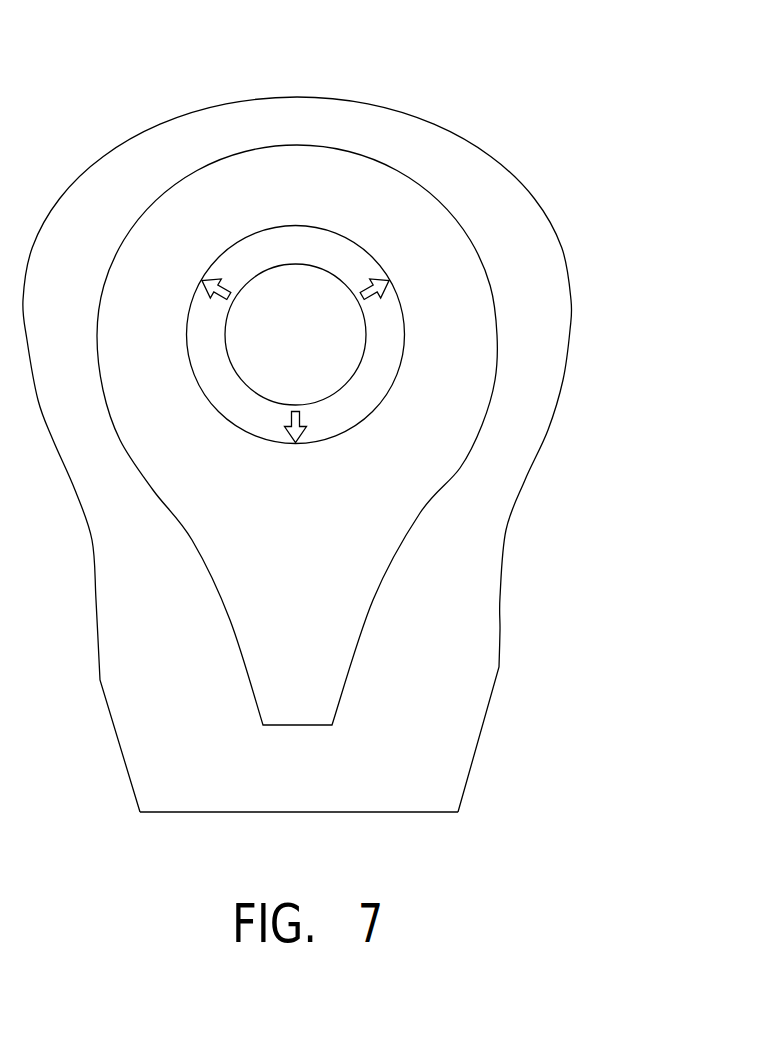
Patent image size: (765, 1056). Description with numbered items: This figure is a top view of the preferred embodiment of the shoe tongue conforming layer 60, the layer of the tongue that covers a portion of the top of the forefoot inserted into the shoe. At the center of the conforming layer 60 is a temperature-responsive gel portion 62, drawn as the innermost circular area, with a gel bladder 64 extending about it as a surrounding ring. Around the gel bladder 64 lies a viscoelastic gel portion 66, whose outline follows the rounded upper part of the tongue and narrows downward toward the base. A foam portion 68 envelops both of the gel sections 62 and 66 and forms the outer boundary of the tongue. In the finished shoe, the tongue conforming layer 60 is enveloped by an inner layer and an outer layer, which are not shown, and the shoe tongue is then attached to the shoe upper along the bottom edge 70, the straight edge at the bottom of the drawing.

The shoe tongue conforming layer 60 is at (338, 456).
The temperature-responsive gel portion 62 is at (352, 343).
The gel bladder 64 is at (362, 268).
The viscoelastic gel portion 66 is at (443, 453).
The foam portion 68 is at (545, 372).
The bottom edge 70 is at (370, 812).